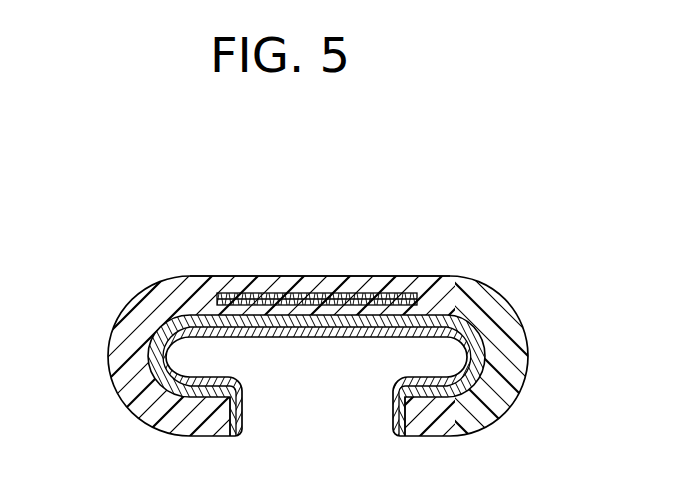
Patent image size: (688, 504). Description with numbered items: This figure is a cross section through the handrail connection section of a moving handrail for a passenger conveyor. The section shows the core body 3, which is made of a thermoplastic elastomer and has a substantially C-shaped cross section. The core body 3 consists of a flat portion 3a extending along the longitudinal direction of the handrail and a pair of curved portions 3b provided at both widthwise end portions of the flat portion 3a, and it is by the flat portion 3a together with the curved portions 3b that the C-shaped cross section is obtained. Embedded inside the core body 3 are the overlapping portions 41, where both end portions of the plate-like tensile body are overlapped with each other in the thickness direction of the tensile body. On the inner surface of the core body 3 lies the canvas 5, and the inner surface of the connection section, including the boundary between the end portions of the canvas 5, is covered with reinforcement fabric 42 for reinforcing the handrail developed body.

The core body 3 is at (455, 288).
The flat portion 3a is at (213, 286).
The curved portions 3b is at (133, 404).
The canvas 5 is at (307, 322).
The overlapping portions 41 is at (357, 300).
The reinforcement fabric 42 is at (309, 338).